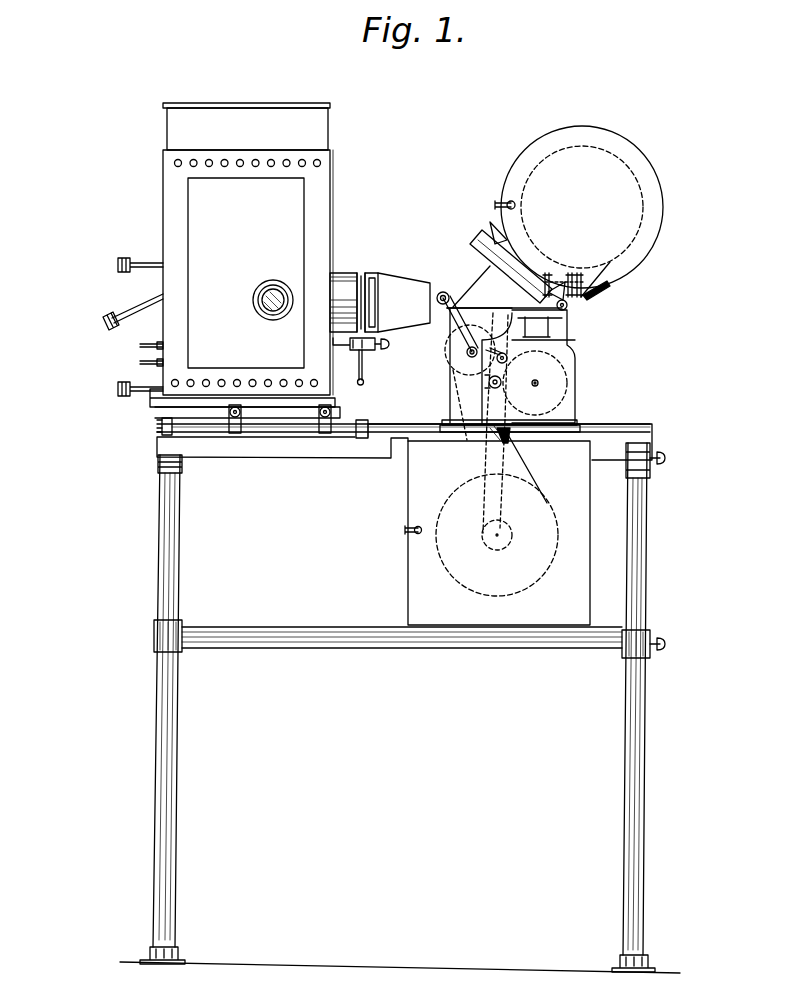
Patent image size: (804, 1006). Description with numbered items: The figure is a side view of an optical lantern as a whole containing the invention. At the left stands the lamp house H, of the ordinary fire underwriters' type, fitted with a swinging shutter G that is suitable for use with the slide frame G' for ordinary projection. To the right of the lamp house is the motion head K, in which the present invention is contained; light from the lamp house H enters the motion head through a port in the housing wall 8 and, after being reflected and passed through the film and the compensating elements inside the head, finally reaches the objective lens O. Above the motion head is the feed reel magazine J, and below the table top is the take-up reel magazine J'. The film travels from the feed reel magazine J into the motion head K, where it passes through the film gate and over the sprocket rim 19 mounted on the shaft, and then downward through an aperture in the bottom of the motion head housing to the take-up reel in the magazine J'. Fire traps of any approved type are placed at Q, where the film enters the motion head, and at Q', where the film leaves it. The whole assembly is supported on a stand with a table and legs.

The lamp house H is at (221, 260).
The slide frame G' is at (380, 278).
The swinging shutter G is at (369, 367).
The feed reel magazine J is at (593, 207).
The housing wall 8 is at (484, 254).
The objective lens O is at (557, 277).
The fire trap Q is at (608, 294).
The motion head K is at (573, 363).
The sprocket rim 19 is at (570, 399).
The fire trap Q' is at (493, 449).
The take-up reel magazine J' is at (509, 522).